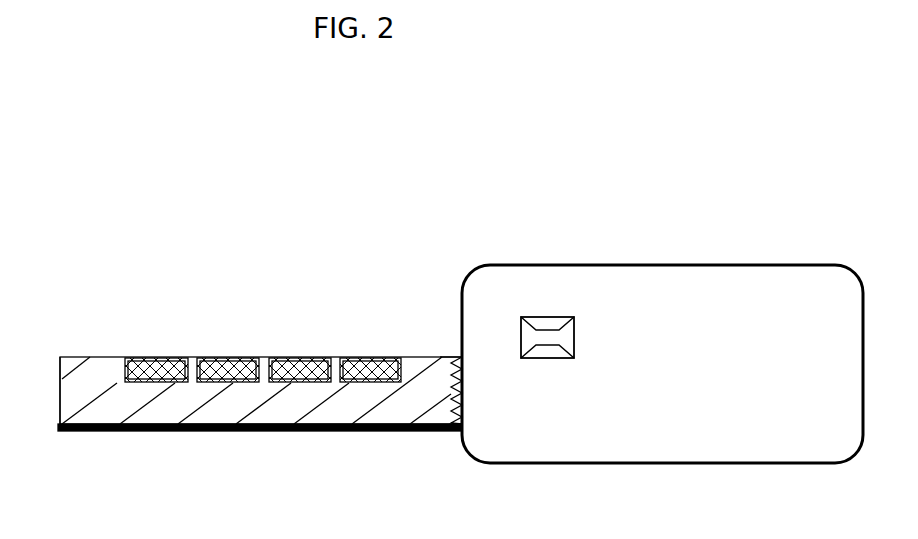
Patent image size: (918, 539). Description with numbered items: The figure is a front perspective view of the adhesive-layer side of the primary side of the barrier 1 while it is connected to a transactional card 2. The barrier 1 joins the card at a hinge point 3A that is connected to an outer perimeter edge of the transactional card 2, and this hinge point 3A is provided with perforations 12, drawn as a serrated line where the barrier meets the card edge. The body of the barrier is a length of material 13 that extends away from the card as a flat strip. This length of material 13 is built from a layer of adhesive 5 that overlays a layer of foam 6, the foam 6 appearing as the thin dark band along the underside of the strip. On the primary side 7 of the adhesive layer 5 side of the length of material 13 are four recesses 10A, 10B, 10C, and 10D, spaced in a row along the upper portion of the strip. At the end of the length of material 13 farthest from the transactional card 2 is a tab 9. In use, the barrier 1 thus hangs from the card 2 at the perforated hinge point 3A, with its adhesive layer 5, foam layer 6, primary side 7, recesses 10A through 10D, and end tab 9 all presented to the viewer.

The barrier 1 is at (395, 417).
The transactional card 2 is at (597, 268).
The hinge point 3A is at (451, 359).
The adhesive layer 5 is at (320, 417).
The layer of foam 6 is at (339, 429).
The primary side 7 is at (218, 417).
The tab 9 is at (63, 402).
The recess 10A is at (173, 362).
The recess 10B is at (246, 362).
The recess 10C is at (322, 362).
The recess 10D is at (397, 363).
The perforations 12 is at (455, 421).
The length of material 13 is at (148, 415).